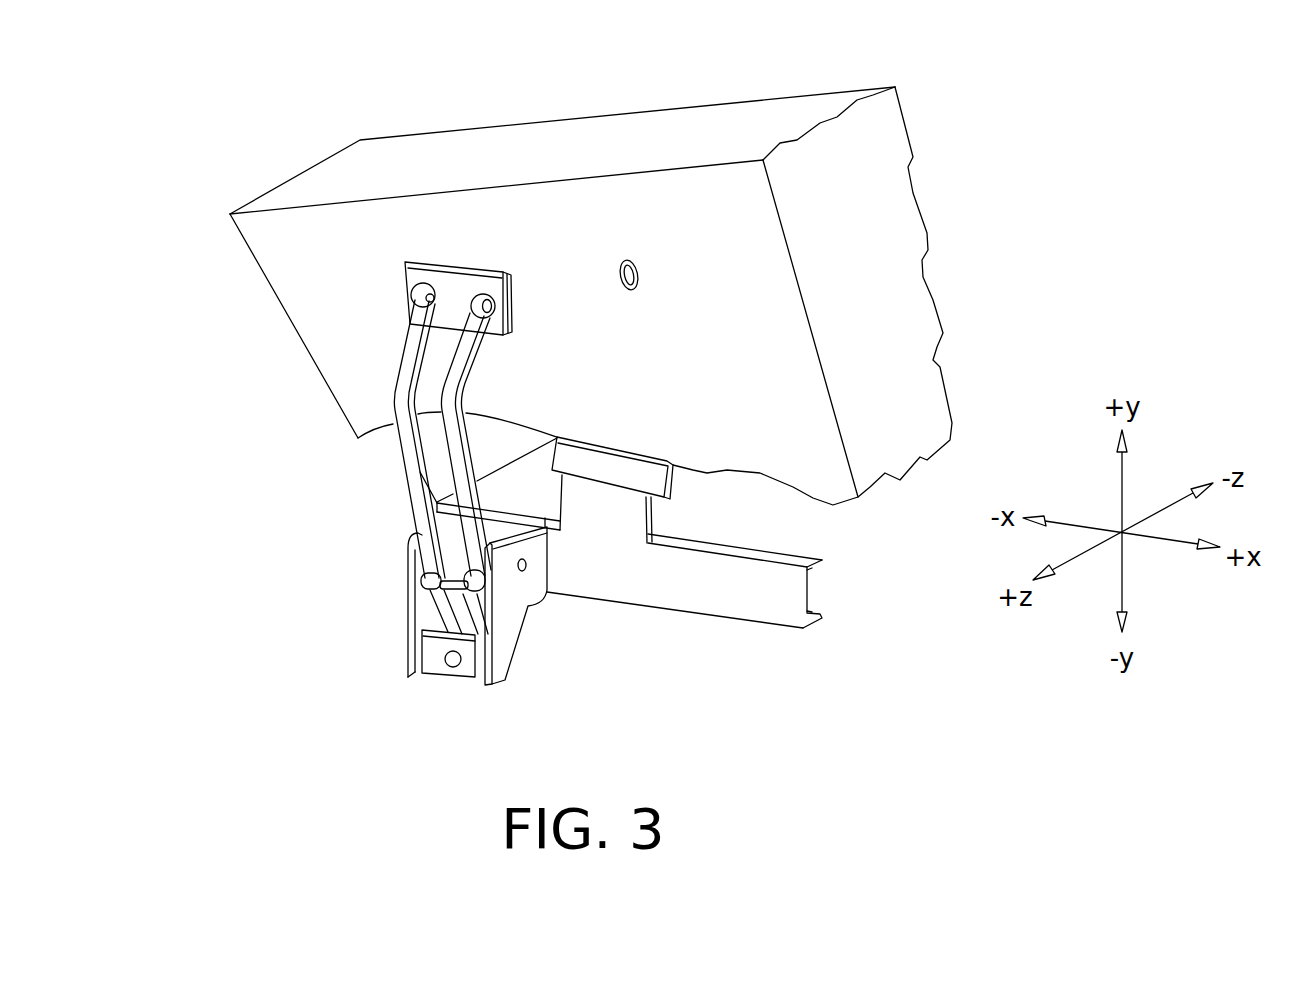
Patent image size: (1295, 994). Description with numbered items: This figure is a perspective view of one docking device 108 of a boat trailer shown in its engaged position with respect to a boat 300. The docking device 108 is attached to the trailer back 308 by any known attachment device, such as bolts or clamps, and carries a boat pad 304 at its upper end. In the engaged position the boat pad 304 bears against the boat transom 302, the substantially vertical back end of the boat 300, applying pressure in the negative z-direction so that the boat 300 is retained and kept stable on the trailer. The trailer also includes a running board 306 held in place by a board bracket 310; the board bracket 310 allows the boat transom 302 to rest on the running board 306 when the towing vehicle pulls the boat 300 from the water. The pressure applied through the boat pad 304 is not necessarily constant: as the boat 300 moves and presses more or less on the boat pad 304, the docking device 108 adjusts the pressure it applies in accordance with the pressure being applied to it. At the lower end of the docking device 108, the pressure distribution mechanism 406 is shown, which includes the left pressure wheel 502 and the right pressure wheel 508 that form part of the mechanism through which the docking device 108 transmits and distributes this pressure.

The boat 300 is at (260, 300).
The boat transom 302 is at (573, 230).
The boat pad 304 is at (447, 280).
The running board 306 is at (633, 468).
The trailer back 308 is at (728, 587).
The board bracket 310 is at (620, 517).
The docking device 108 is at (405, 498).
The pressure distribution mechanism 406 is at (459, 572).
The left pressure wheel 502 is at (413, 620).
The right pressure wheel 508 is at (468, 614).